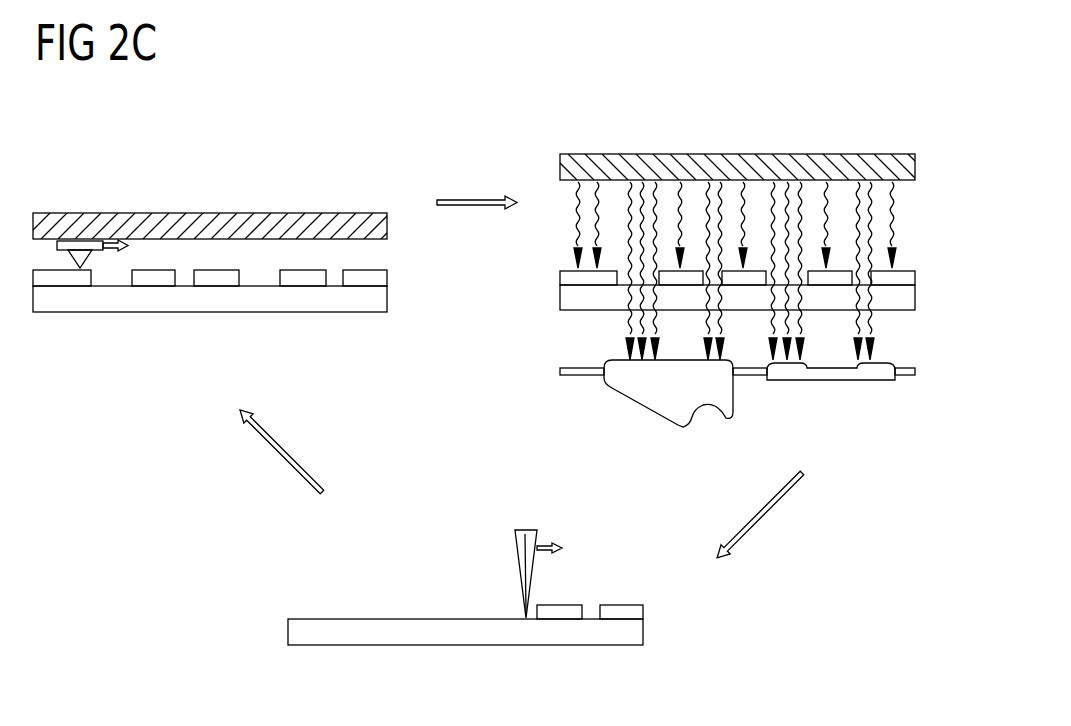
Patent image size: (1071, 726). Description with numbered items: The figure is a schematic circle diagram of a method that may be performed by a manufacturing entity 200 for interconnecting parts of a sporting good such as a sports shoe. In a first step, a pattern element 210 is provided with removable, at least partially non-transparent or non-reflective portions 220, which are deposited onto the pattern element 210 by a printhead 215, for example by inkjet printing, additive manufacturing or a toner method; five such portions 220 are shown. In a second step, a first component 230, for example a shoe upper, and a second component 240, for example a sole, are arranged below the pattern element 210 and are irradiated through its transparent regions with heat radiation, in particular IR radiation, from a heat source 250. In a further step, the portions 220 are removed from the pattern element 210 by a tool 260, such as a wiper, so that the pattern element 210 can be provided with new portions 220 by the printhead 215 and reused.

The manufacturing entity 200 is at (500, 90).
The pattern element 210 is at (267, 303).
The printhead 215 is at (345, 226).
The at least partially non-transparent or non-reflective portion 220 is at (55, 280).
The first component 230 is at (655, 397).
The second component 240 is at (843, 378).
The heat source 250 is at (860, 164).
The tool 260 is at (527, 537).